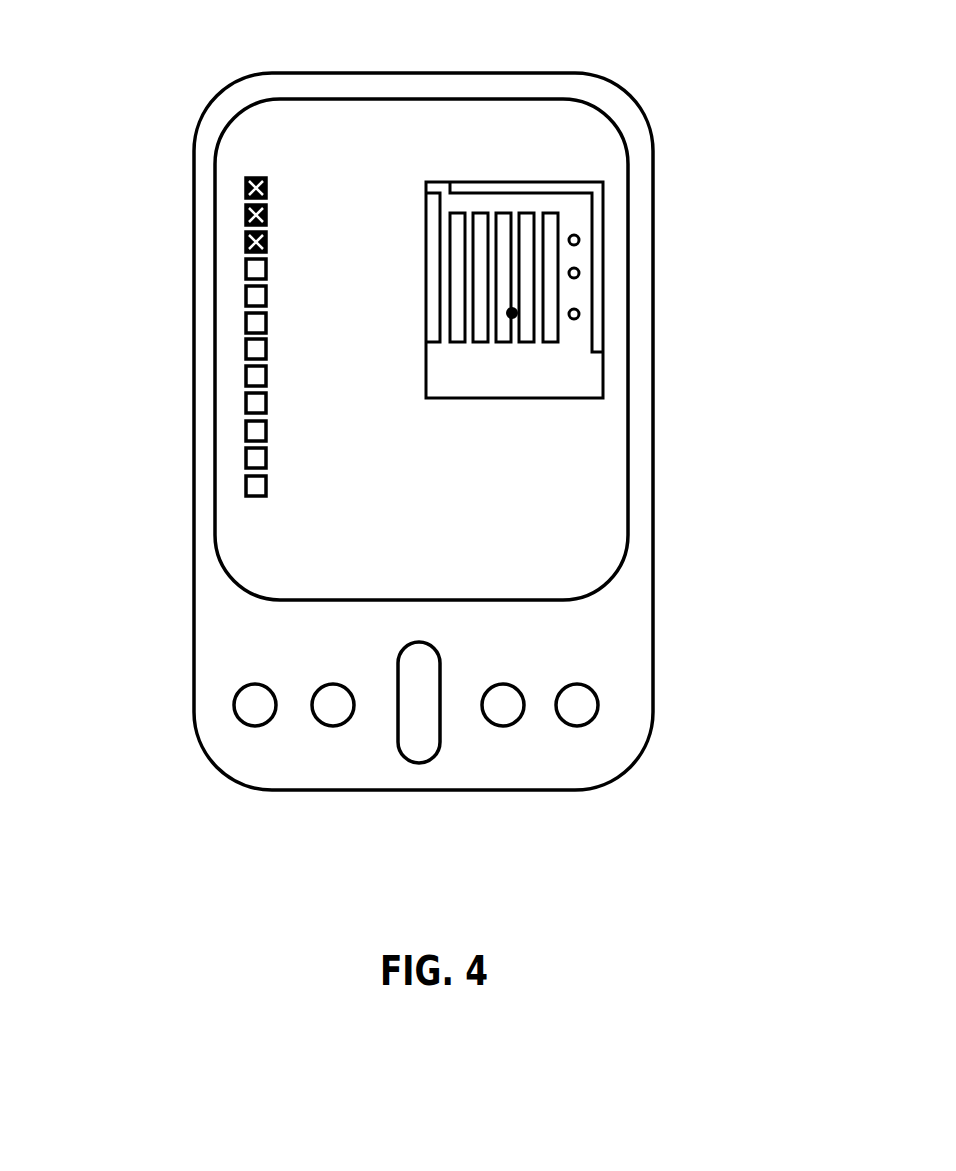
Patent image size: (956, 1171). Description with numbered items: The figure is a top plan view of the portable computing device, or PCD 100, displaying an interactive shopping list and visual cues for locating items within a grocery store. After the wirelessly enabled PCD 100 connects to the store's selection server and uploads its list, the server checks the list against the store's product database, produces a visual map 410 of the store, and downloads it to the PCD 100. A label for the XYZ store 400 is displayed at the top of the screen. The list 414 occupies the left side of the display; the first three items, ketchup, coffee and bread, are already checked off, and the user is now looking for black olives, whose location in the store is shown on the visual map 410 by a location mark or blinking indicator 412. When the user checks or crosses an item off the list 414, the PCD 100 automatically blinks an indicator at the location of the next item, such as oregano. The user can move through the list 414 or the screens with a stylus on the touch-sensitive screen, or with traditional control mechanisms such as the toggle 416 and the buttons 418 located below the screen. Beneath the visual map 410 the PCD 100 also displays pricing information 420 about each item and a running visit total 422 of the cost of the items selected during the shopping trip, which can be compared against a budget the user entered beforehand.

The portable computing device (PCD) 100 is at (194, 680).
The XYZ store label 400 is at (445, 127).
The visual map 410 is at (604, 366).
The location mark or blinking indicator 412 is at (512, 313).
The list 414 is at (305, 172).
The toggle 416 is at (440, 745).
The buttons 418 is at (597, 697).
The pricing information 420 is at (612, 428).
The visit total 422 is at (612, 458).